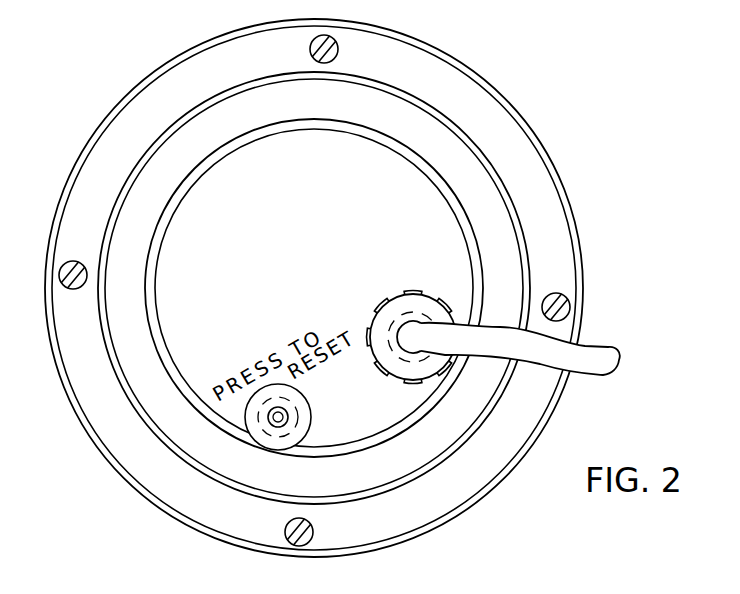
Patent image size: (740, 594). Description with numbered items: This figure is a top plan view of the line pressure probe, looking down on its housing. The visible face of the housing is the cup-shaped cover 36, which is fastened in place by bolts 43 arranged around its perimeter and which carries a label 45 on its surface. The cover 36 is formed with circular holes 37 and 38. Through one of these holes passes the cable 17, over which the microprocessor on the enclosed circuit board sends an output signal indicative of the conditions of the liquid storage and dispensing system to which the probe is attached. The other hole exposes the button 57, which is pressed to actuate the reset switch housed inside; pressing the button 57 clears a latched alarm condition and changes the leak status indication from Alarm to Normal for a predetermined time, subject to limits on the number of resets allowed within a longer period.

The cable 17 is at (588, 340).
The cup-shaped cover 36 is at (448, 150).
The circular hole 37 is at (298, 413).
The circular hole 38 is at (410, 310).
The bolts 43 is at (585, 300).
The label 45 is at (442, 228).
The button 57 is at (278, 425).